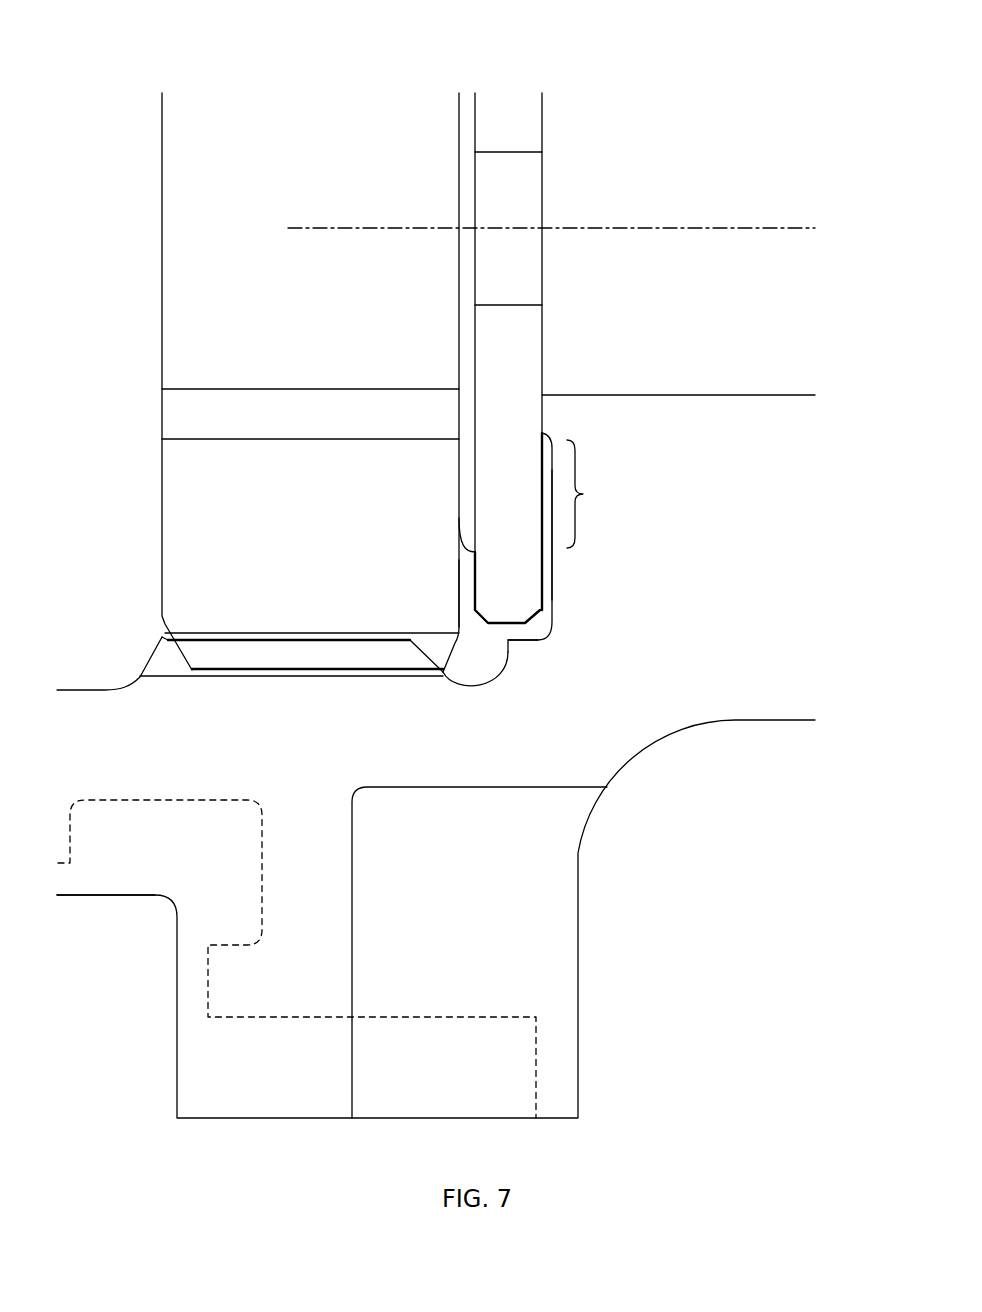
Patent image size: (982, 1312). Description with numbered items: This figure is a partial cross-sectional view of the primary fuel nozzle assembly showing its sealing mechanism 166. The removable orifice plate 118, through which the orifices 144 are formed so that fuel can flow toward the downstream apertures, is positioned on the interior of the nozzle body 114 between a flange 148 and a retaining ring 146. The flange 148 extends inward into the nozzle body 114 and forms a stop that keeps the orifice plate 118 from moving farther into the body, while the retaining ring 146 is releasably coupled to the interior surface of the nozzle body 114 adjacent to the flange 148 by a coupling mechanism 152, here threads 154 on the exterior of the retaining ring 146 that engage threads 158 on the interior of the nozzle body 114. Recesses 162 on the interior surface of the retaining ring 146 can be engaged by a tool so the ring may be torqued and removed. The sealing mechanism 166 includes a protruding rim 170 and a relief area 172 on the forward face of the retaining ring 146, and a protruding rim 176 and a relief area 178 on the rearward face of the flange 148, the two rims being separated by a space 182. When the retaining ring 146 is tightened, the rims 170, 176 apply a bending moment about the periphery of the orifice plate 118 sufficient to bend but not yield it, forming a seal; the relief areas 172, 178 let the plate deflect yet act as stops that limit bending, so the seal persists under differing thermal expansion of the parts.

The nozzle body 114 is at (155, 883).
The orifice plate 118 is at (505, 118).
The orifices 144 is at (525, 186).
The retaining ring 146 is at (193, 143).
The flange 148 is at (553, 602).
The coupling mechanism 152 is at (160, 635).
The threads 154 is at (435, 653).
The threads 158 is at (170, 658).
The recesses 162 is at (170, 413).
The sealing mechanism 166 is at (515, 702).
The protruding rim 170 is at (463, 592).
The relief area 172 is at (463, 518).
The protruding rim 176 is at (545, 415).
The relief area 178 is at (547, 572).
The space 182 is at (573, 522).